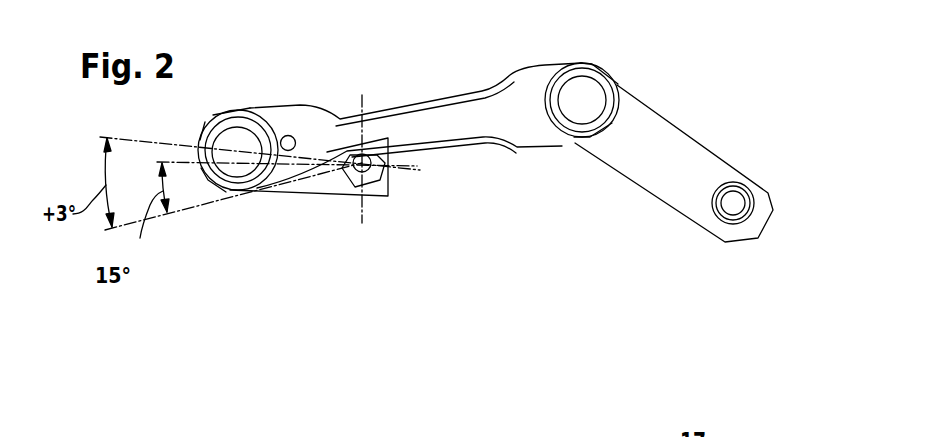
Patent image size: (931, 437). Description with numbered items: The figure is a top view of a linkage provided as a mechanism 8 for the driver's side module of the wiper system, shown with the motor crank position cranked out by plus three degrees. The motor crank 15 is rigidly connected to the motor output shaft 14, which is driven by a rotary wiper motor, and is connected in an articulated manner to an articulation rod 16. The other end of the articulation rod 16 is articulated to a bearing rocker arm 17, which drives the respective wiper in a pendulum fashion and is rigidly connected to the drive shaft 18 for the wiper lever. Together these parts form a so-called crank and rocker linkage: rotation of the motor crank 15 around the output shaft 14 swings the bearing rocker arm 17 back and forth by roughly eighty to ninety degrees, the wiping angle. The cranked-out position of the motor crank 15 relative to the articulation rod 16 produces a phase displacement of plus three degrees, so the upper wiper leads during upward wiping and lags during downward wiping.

The mechanism 8 is at (490, 176).
The motor output shaft 14 is at (382, 197).
The motor crank 15 is at (327, 187).
The articulation rod 16 is at (462, 110).
The bearing rocker arm 17 is at (672, 125).
The drive shaft 18 is at (737, 203).